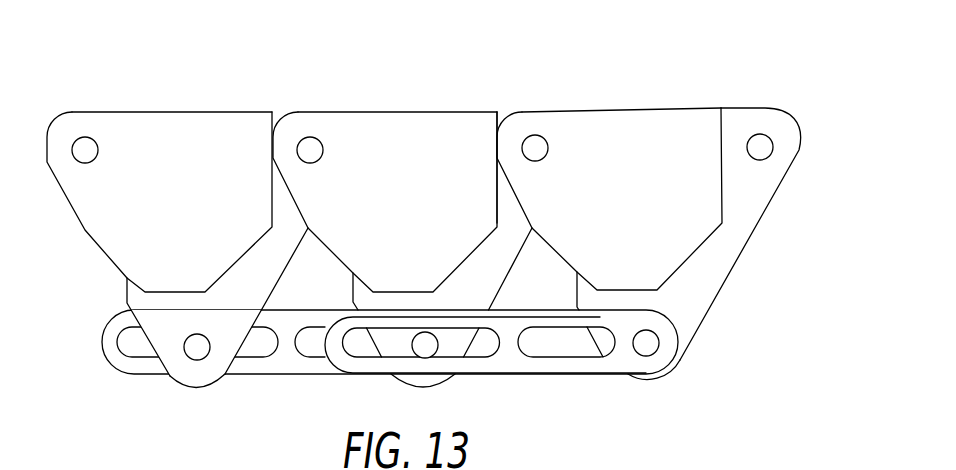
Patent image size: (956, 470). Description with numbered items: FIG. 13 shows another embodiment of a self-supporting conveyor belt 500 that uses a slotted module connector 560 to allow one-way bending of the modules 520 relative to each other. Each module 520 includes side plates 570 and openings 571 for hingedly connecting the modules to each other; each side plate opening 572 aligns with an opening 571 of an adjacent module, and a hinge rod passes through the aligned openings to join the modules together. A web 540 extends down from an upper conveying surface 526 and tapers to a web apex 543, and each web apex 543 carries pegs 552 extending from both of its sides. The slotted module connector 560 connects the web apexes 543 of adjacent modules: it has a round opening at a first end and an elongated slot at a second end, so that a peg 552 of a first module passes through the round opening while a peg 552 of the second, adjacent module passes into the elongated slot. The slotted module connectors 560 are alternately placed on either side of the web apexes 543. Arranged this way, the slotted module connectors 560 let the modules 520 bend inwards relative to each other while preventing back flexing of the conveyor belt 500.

The conveyor belt 500 is at (710, 87).
The module 520 is at (227, 110).
The upper conveying surface 526 is at (592, 110).
The web 540 is at (243, 324).
The web apex 543 is at (200, 385).
The peg 552 is at (195, 350).
The slotted module connector 560 is at (559, 362).
The side plate 570 is at (218, 184).
The opening 571 is at (760, 147).
The side plate opening 572 is at (85, 147).